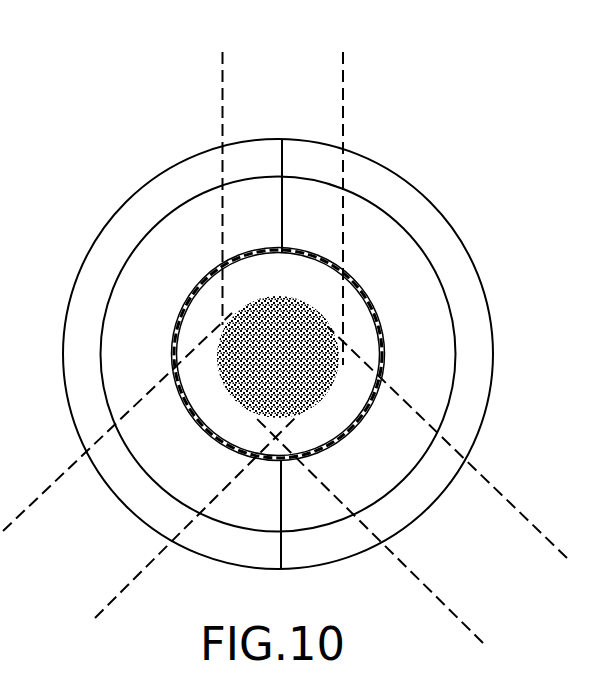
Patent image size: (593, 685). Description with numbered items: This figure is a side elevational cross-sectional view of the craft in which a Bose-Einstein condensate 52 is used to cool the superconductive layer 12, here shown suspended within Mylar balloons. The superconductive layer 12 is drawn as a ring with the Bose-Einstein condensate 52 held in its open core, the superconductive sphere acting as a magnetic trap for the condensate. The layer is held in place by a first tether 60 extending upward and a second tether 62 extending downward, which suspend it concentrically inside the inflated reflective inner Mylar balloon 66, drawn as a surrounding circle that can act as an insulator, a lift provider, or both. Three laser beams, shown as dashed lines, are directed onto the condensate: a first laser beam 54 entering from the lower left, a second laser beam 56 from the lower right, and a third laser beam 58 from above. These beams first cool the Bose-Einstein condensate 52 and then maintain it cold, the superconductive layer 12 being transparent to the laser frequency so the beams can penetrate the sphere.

The superconductive layer 12 is at (363, 296).
The Bose-Einstein condensate 52 is at (235, 325).
The first laser beam 54 is at (95, 529).
The second laser beam 56 is at (483, 583).
The third laser beam 58 is at (292, 75).
The first tether 60 is at (284, 213).
The second tether 62 is at (281, 522).
The inner Mylar balloon 66 is at (385, 212).